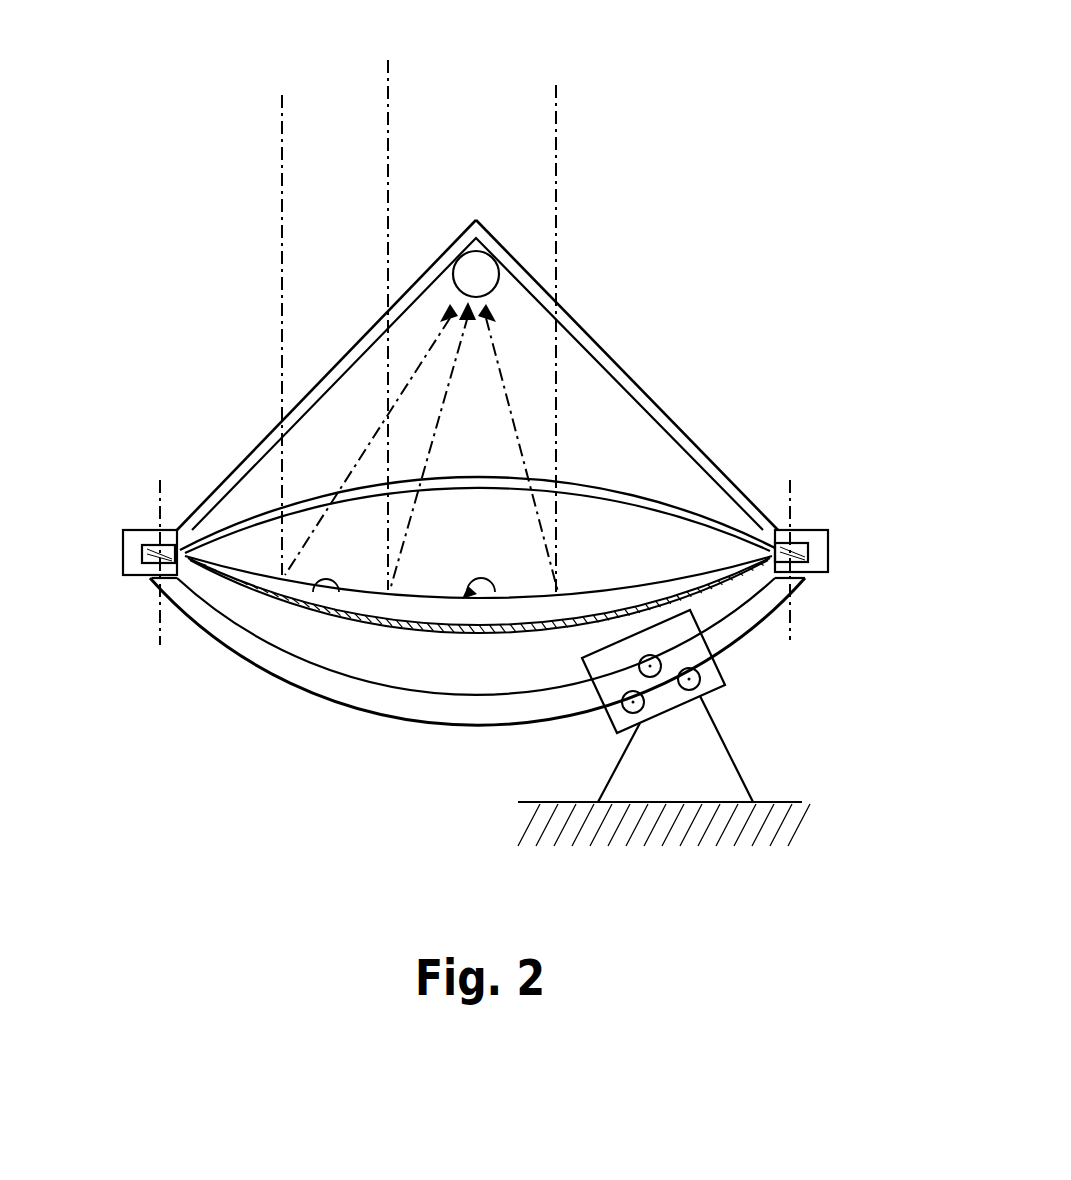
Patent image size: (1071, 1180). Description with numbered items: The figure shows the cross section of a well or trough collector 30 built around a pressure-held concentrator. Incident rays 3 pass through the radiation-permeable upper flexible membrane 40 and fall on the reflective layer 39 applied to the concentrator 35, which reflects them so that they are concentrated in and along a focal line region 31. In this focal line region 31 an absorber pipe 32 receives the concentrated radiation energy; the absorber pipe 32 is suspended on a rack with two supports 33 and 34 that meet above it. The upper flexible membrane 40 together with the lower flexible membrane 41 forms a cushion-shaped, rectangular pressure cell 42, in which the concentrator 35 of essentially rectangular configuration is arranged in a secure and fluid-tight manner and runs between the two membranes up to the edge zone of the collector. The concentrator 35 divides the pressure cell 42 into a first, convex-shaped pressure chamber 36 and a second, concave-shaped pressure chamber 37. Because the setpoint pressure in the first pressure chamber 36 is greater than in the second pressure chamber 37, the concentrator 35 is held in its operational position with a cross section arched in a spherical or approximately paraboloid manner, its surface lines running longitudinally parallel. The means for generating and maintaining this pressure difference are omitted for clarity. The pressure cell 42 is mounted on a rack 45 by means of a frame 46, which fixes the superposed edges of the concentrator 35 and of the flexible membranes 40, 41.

The rays 3 is at (388, 108).
The trough collector 30 is at (465, 293).
The focal line region 31 is at (530, 250).
The absorber pipe 32 is at (477, 268).
The support 33 is at (623, 367).
The support 34 is at (320, 372).
The concentrator 35 is at (322, 590).
The first pressure chamber 36 is at (340, 600).
The second pressure chamber 37 is at (265, 505).
The reflective layer 39 is at (497, 598).
The upper flexible membrane 40 is at (703, 513).
The lower flexible membrane 41 is at (433, 632).
The pressure cell 42 is at (653, 445).
The rack 45 is at (752, 607).
The frame 46 is at (130, 537).